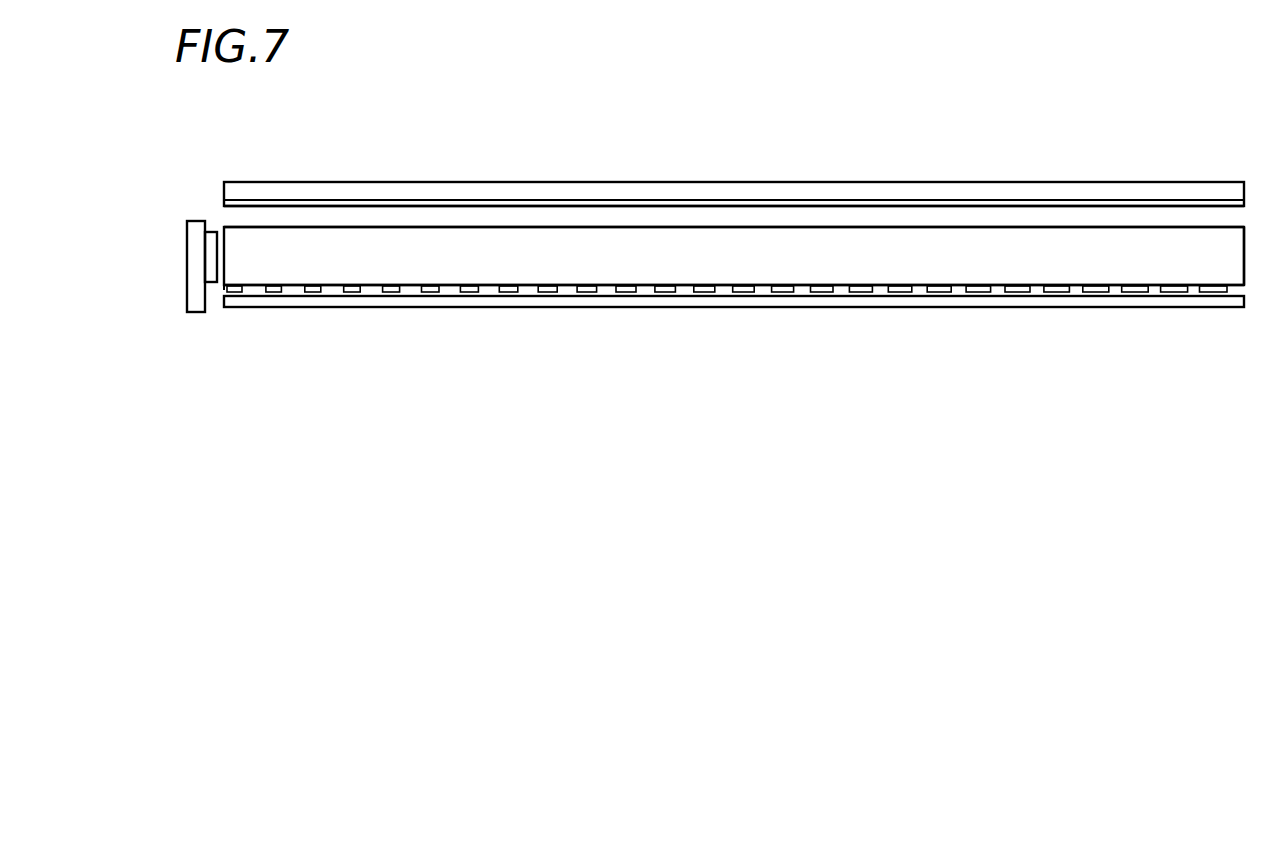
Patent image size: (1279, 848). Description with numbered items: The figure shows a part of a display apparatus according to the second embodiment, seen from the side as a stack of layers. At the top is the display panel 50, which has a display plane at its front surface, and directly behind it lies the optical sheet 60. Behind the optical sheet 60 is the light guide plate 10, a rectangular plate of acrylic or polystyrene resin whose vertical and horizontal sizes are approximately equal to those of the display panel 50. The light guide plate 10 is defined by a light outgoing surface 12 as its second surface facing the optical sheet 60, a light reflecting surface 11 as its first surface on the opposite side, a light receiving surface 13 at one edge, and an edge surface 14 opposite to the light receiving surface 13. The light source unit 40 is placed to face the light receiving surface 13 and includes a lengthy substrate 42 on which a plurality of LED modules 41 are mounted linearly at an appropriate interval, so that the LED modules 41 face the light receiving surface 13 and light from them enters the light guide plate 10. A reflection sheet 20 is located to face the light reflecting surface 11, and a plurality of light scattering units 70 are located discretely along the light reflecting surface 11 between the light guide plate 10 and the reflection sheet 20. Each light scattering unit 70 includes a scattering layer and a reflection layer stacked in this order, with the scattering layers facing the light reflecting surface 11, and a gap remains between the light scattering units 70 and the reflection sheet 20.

The light guide plate 10 is at (1036, 270).
The light reflecting surface 11 is at (613, 286).
The light outgoing surface 12 is at (556, 227).
The light receiving surface 13 is at (219, 286).
The edge surface 14 is at (1245, 258).
The reflection sheet 20 is at (413, 298).
The light source unit 40 is at (167, 320).
The LED modules 41 is at (208, 283).
The substrate 42 is at (186, 267).
The display panel 50 is at (379, 190).
The optical sheet 60 is at (464, 205).
The light scattering units 70 is at (235, 292).